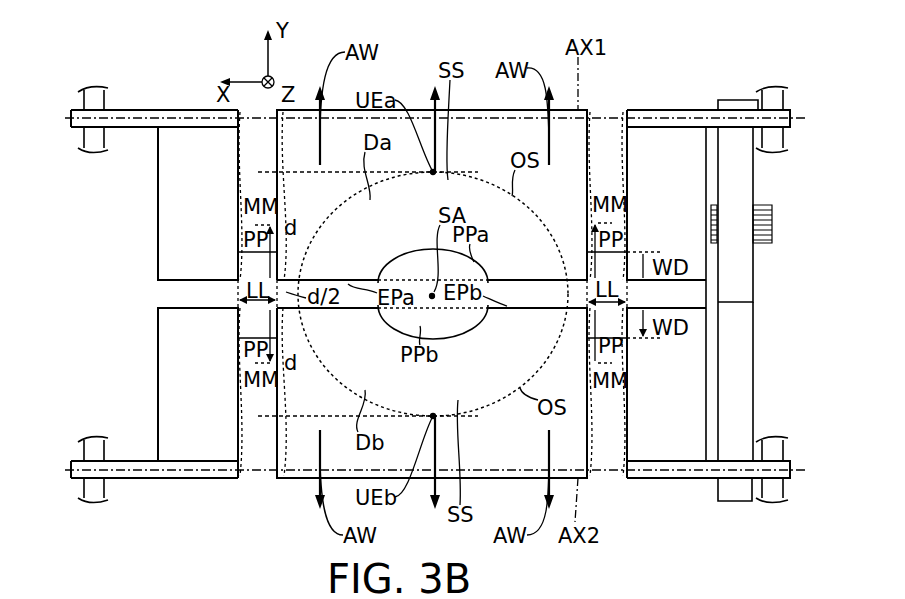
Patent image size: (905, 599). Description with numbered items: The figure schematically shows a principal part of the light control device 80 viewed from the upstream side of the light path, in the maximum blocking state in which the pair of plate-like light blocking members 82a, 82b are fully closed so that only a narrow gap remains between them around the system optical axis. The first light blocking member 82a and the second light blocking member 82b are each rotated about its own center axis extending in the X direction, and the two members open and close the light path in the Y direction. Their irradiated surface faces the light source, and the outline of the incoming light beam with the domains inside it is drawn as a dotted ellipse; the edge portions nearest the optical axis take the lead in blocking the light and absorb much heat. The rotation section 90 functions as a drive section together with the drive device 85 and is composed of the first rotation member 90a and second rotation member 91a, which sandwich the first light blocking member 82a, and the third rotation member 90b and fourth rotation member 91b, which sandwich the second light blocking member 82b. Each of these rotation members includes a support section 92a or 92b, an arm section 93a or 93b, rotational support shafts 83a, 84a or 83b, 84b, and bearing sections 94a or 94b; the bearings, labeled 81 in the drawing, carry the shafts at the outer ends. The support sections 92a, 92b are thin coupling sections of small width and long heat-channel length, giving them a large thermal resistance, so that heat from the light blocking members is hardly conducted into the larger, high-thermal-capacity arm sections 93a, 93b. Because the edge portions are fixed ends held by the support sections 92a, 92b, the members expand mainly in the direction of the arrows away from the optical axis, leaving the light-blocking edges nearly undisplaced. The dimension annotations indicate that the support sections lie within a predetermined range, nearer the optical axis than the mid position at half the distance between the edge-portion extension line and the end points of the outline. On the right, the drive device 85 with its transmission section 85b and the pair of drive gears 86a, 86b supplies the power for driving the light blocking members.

The light control device 80 is at (725, 77).
The bearing 81 is at (91, 149).
The first light blocking member 82a is at (490, 130).
The second light blocking member 82b is at (510, 450).
The rotational support shaft 83a is at (757, 118).
The rotational support shaft 83b is at (757, 478).
The rotational support shaft 84a is at (138, 118).
The rotational support shaft 84b is at (133, 478).
The drive device 85 is at (720, 505).
The transmission section 85b is at (765, 245).
The drive gear 86a is at (741, 177).
The drive gear 86b is at (748, 340).
The rotation section 90 is at (98, 77).
The first rotation member 90a is at (176, 81).
The third rotation member 90b is at (184, 499).
The second rotation member 91a is at (663, 97).
The fourth rotation member 91b is at (663, 500).
The first support section 92a is at (241, 210).
The second support section 92b is at (241, 400).
The first arm section 93a is at (182, 207).
The second arm section 93b is at (182, 380).
The bearing section 94a is at (75, 118).
The bearing section 94b is at (80, 472).